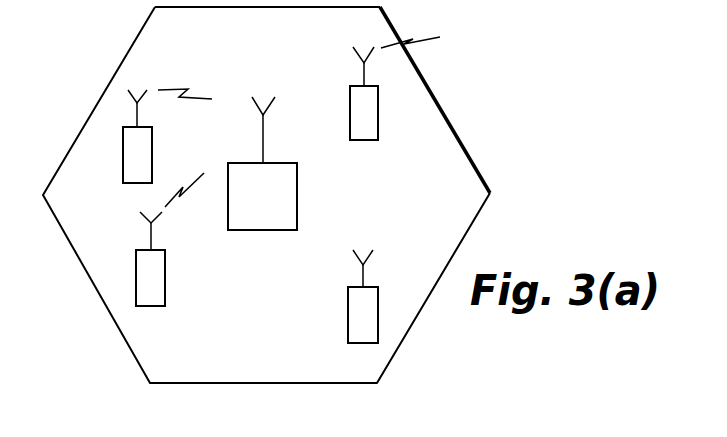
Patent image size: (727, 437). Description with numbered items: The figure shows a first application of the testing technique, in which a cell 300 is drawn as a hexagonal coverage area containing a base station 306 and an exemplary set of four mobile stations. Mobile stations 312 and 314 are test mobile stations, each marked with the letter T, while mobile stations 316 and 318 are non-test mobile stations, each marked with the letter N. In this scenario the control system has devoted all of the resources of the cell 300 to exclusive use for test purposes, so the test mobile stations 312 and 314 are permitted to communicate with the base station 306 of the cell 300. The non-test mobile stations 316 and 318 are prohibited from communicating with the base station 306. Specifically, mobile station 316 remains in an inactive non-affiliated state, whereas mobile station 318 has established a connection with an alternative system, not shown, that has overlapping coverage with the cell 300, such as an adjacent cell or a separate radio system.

The cell 300 is at (86, 30).
The base station 306 is at (297, 195).
The test mobile station 312 is at (122, 162).
The test mobile station 314 is at (165, 277).
The non-test mobile station 316 is at (348, 316).
The non-test mobile station 318 is at (378, 124).